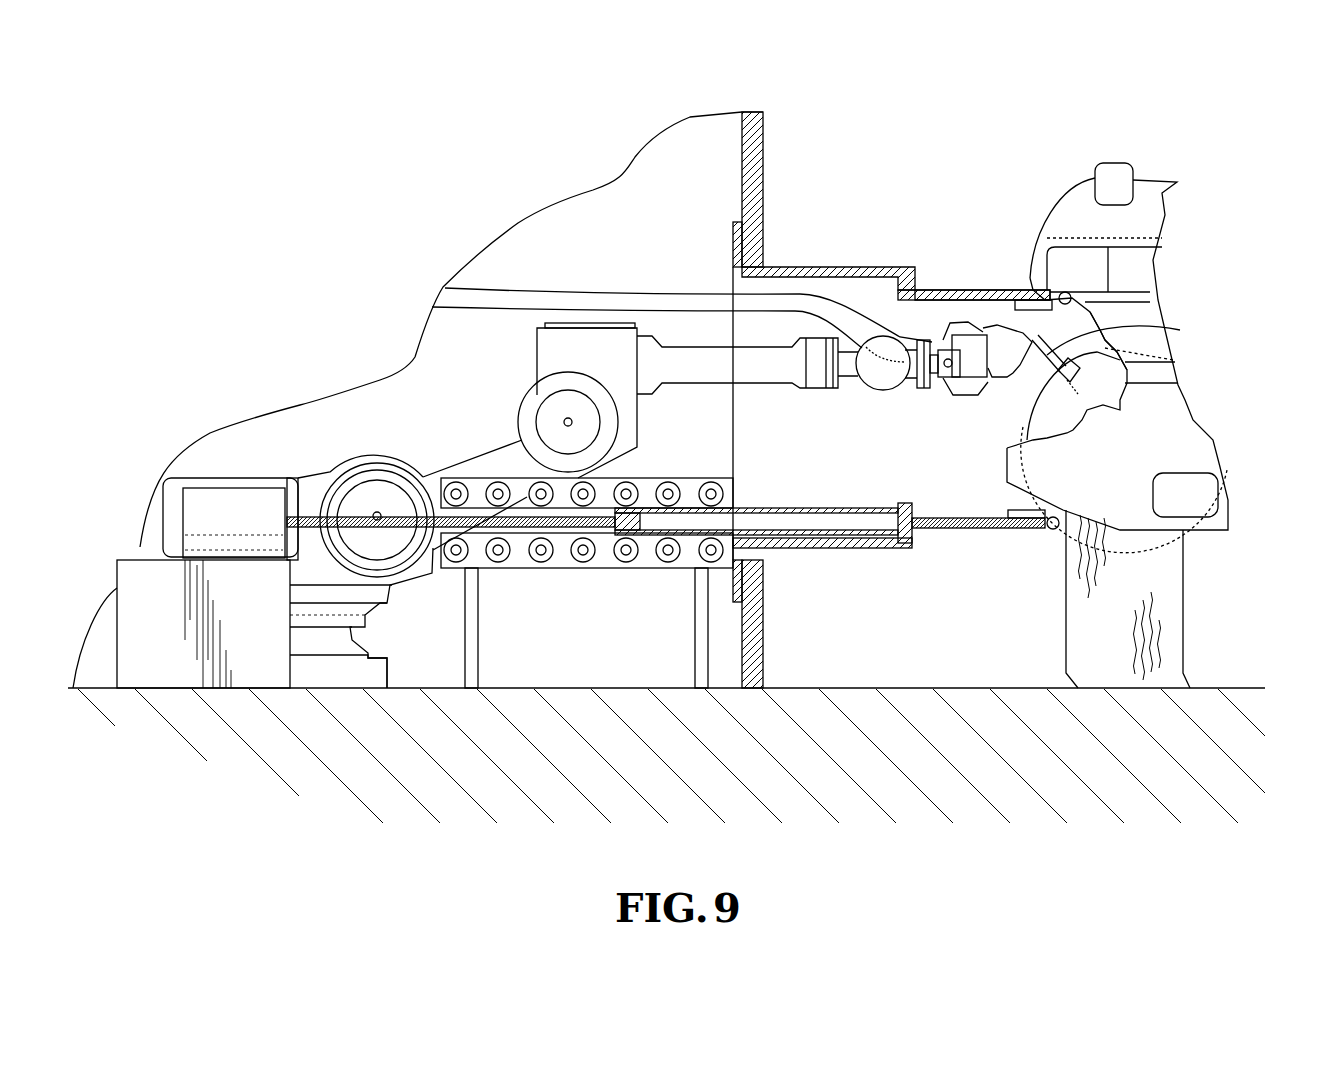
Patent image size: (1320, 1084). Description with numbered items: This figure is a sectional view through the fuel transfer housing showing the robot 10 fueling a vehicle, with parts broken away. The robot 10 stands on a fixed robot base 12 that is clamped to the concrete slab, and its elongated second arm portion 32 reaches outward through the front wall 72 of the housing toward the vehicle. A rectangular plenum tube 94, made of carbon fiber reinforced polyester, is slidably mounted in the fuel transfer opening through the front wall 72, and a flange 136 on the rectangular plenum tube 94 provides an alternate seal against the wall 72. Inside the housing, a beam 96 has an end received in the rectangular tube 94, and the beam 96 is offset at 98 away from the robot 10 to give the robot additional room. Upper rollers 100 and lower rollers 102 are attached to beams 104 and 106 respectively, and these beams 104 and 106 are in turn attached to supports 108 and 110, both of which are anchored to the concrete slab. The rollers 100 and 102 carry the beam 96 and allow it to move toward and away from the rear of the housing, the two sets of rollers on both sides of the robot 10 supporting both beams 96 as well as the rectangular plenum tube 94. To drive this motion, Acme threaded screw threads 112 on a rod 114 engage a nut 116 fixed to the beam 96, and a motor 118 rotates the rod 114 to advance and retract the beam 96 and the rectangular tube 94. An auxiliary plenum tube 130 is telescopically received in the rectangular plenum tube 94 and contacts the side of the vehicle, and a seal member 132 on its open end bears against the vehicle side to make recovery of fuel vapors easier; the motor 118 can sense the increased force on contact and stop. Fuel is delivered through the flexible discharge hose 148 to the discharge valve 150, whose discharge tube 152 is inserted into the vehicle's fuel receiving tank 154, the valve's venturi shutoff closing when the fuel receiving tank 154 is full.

The robot 10 is at (368, 432).
The fixed robot base 12 is at (388, 680).
The elongated second arm portion 32 is at (768, 385).
The front wall 72 is at (763, 147).
The rectangular plenum tube 94 is at (830, 265).
The beams 96 is at (845, 508).
The offset 98 is at (740, 520).
The upper rollers 100 is at (482, 492).
The lower rollers 102 is at (612, 569).
The beam 104 is at (688, 478).
The beam 106 is at (560, 569).
The support 108 is at (462, 688).
The support 110 is at (712, 685).
The Acme threaded screw threads 112 is at (324, 478).
The rod 114 is at (297, 525).
The nut 116 is at (640, 545).
The motor 118 is at (225, 478).
The auxiliary plenum tube 130 is at (963, 290).
The seal member 132 is at (1050, 535).
The flange 136 is at (735, 243).
The flexible discharge hose 148 is at (515, 292).
The discharge valve 150 is at (1003, 335).
The discharge tube 152 is at (1065, 350).
The fuel receiving tank 154 is at (1172, 330).